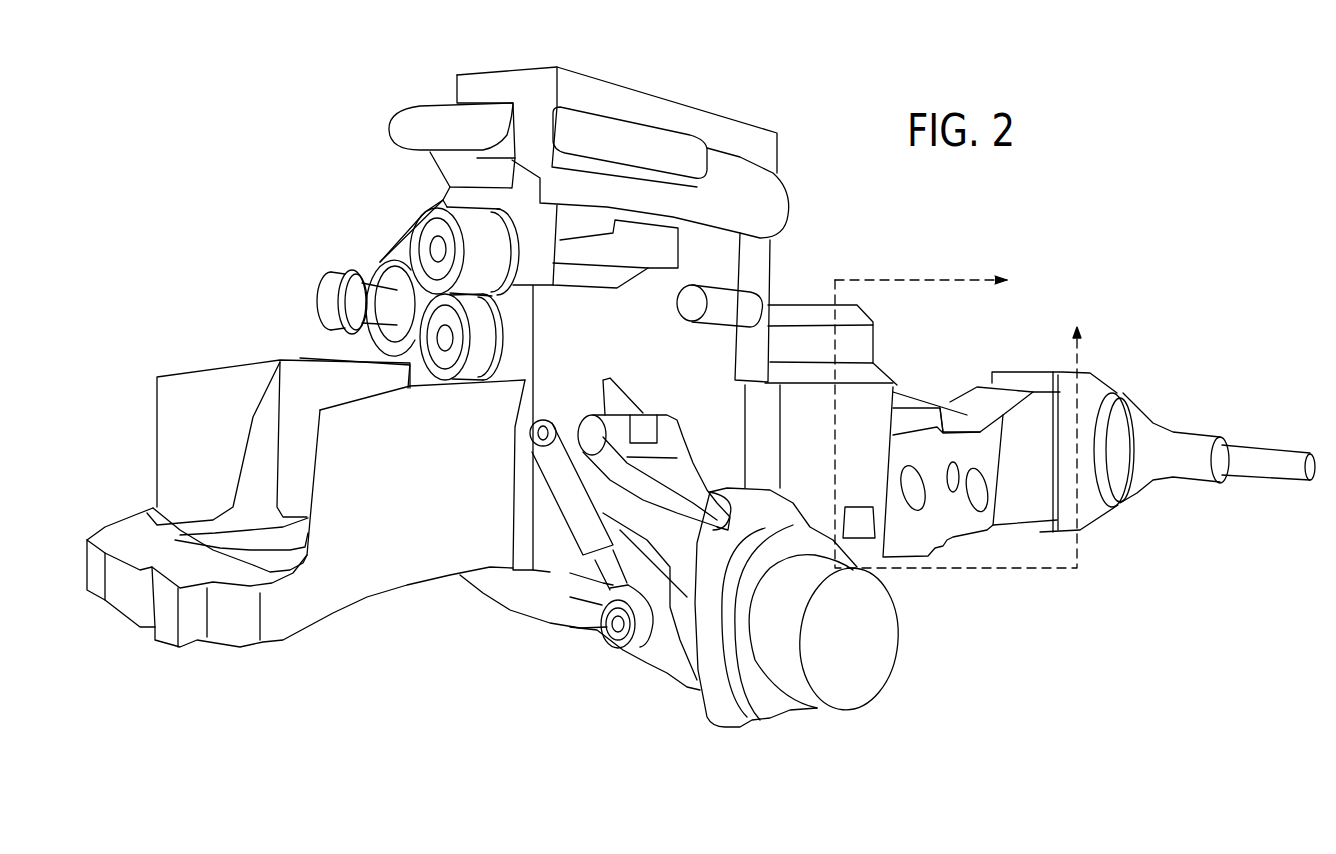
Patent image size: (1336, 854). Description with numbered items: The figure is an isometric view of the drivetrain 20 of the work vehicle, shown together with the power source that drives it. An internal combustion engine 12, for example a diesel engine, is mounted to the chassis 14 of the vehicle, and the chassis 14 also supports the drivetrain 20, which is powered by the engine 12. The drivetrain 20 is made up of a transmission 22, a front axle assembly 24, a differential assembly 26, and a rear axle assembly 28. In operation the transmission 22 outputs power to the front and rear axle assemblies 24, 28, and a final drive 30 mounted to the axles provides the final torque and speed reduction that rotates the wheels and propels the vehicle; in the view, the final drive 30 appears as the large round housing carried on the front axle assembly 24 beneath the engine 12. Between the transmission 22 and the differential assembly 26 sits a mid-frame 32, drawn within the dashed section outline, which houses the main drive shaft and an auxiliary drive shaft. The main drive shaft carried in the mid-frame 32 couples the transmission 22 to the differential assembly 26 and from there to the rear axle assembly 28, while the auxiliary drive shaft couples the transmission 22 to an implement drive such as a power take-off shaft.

The internal combustion engine 12 is at (627, 107).
The chassis 14 is at (240, 647).
The drivetrain 20 is at (1075, 402).
The transmission 22 is at (863, 405).
The front axle assembly 24 is at (653, 663).
The differential assembly 26 is at (1032, 387).
The rear axle assembly 28 is at (1173, 445).
The final drive 30 is at (848, 680).
The mid-frame 32 is at (960, 411).